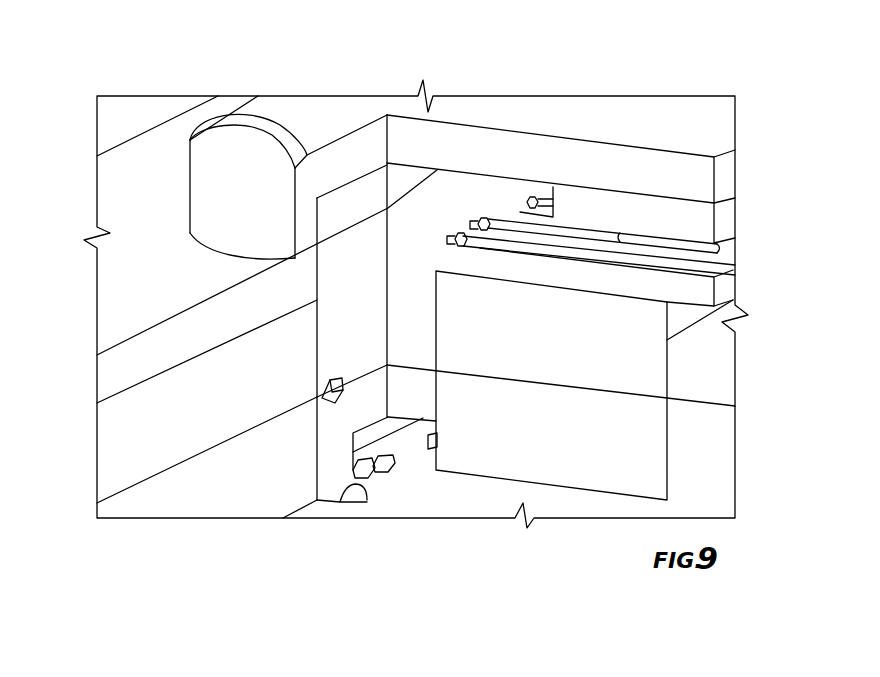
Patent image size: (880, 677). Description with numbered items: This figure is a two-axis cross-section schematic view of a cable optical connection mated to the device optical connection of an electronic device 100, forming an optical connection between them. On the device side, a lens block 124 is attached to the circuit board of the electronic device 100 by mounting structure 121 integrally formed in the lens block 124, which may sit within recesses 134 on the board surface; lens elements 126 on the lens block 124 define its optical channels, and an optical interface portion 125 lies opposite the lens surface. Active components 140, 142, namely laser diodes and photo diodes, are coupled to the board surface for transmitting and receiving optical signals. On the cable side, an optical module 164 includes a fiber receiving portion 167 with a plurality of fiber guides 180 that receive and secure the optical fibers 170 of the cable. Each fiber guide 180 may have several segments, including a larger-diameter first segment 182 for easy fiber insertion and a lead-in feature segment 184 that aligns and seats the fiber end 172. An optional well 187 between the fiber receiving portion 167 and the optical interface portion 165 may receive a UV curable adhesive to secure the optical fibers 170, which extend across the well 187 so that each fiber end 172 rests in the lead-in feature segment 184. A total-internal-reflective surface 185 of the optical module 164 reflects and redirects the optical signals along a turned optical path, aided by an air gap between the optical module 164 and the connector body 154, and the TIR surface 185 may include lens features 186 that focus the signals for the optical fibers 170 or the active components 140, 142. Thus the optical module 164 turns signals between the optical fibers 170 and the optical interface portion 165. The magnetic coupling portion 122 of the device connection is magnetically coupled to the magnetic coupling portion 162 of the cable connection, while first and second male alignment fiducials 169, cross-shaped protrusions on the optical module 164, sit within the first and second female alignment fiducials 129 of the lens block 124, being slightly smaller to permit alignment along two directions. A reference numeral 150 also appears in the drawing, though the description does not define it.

The electronic device 100 is at (177, 510).
The mounting structure 121 is at (333, 490).
The magnetic coupling portion 122 is at (637, 431).
The lens block 124 is at (413, 401).
The optical interface portion 125 is at (380, 372).
The lens elements 126 is at (367, 430).
The female alignment fiducials 129 is at (327, 405).
The recesses 134 is at (367, 500).
The active components 140 is at (420, 485).
The active components 142 is at (373, 473).
The fluid delivery system 150 is at (180, 72).
The connector body 154 is at (298, 113).
The magnetic coupling portion 162 is at (152, 405).
The optical module 164 is at (412, 300).
The optical interface portion 165 is at (420, 378).
The fiber receiving portion 167 is at (725, 225).
The male alignment fiducials 169 is at (327, 378).
The optical fibers 170 is at (507, 226).
The fiber end 172 is at (471, 222).
The fiber guides 180 is at (585, 265).
The first segment 182 is at (637, 231).
The lead-in feature segment 184 is at (479, 218).
The total-internal-reflective surface 185 is at (343, 238).
The lens features 186 is at (367, 223).
The well 187 is at (495, 193).